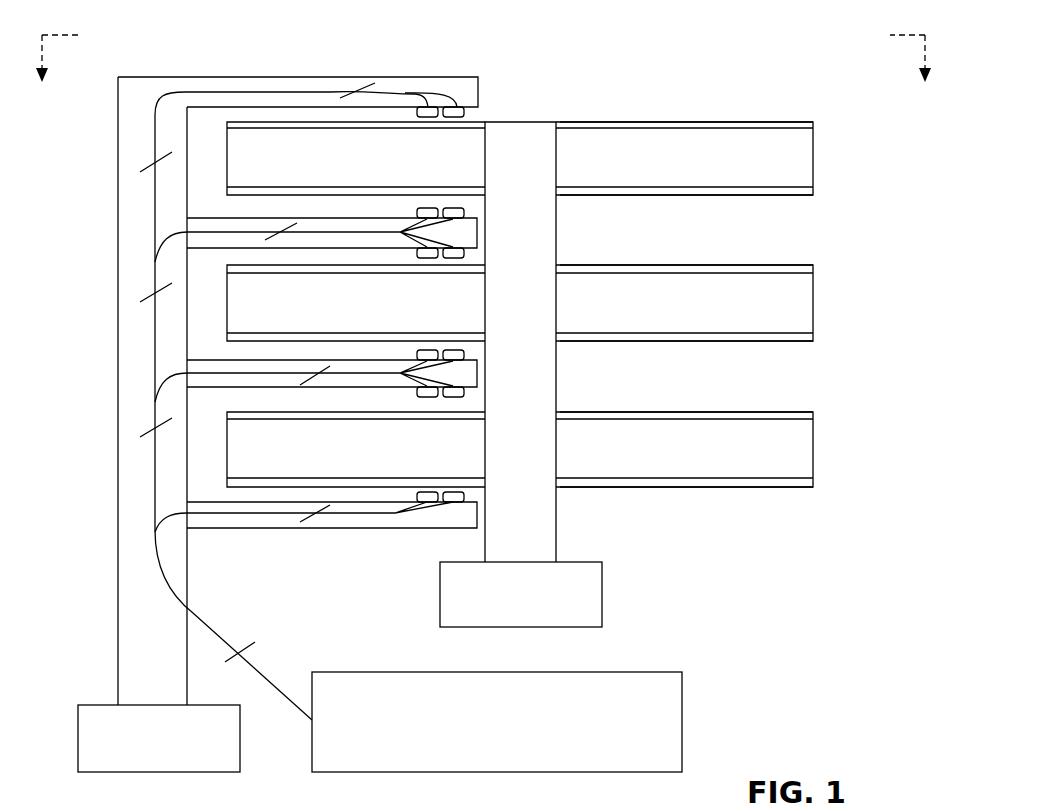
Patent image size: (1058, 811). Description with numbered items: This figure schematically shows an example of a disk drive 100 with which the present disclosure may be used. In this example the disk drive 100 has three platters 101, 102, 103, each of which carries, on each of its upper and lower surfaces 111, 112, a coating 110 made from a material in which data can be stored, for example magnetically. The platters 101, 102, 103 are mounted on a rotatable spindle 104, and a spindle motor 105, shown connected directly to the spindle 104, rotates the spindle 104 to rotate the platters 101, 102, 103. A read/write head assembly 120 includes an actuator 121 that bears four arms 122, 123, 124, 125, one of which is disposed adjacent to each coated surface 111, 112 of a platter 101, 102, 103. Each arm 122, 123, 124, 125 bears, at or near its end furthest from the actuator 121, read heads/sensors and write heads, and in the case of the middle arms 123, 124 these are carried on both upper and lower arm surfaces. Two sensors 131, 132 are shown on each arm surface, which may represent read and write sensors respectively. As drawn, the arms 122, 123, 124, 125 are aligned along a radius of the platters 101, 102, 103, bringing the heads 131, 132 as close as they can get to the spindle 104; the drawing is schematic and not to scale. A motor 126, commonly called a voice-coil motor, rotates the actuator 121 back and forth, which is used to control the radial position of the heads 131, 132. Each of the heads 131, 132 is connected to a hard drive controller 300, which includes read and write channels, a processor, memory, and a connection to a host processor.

The disk drive 100 is at (160, 38).
The platter 101 is at (815, 160).
The platter 102 is at (815, 300).
The platter 103 is at (815, 447).
The rotatable spindle 104 is at (530, 132).
The spindle motor 105 is at (604, 593).
The coating 110 is at (813, 122).
The upper surface 111 is at (635, 122).
The lower surface 112 is at (635, 195).
The read/write head assembly 120 is at (106, 208).
The actuator 121 is at (118, 313).
The arm 122 is at (300, 77).
The arm 123 is at (315, 217).
The arm 124 is at (315, 360).
The arm 125 is at (315, 503).
The voice-coil motor 126 is at (117, 704).
The sensor 131 is at (460, 118).
The sensor 132 is at (427, 118).
The hard drive controller 300 is at (386, 672).